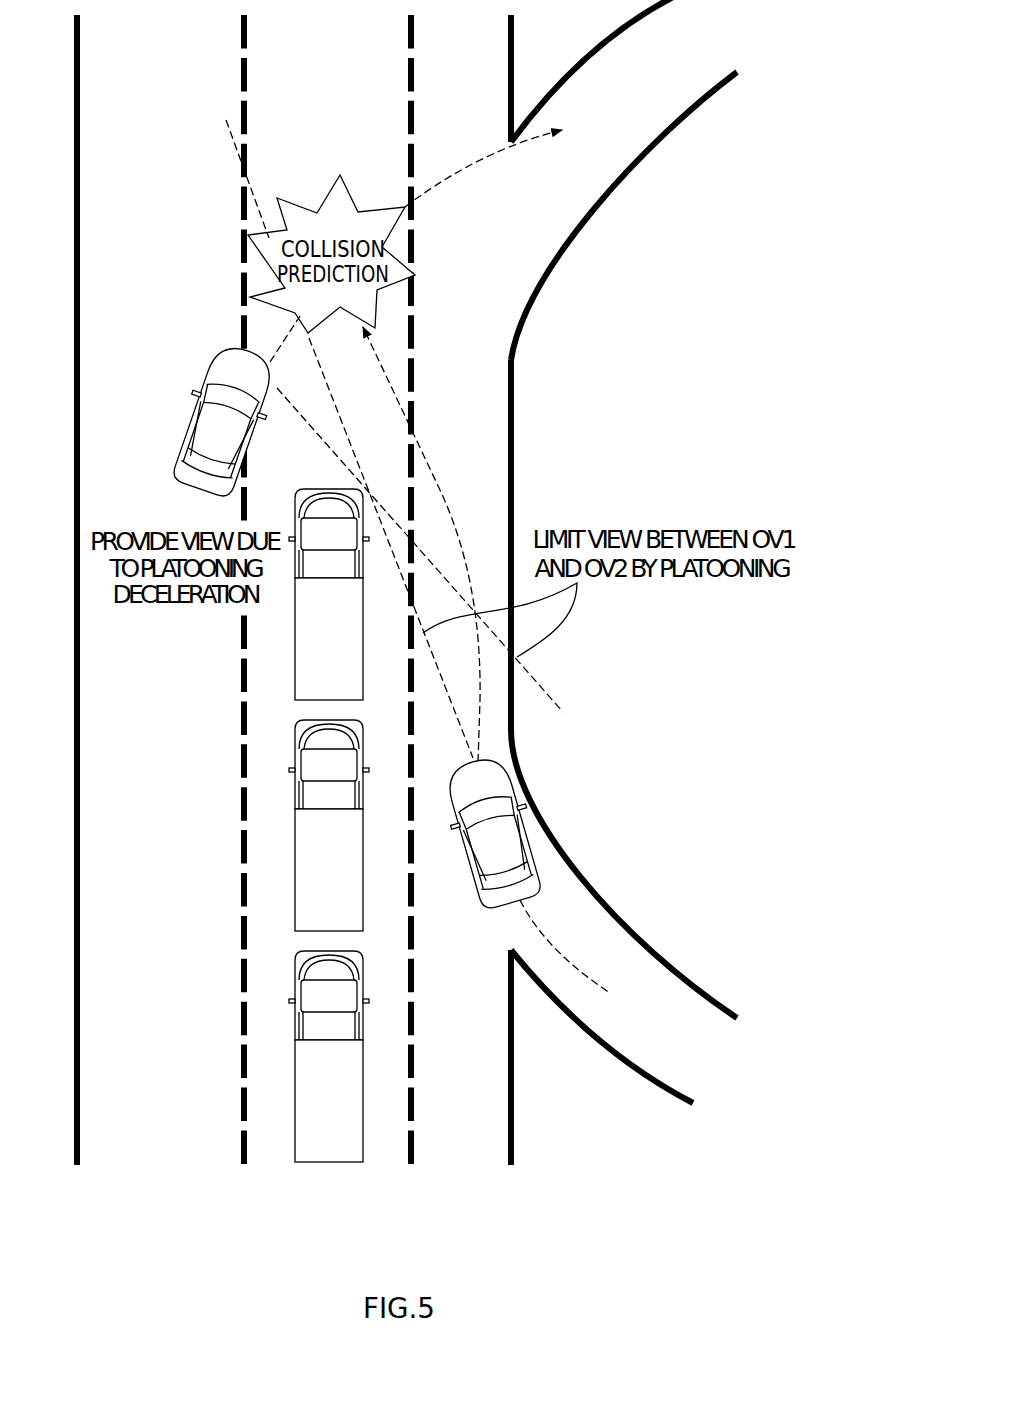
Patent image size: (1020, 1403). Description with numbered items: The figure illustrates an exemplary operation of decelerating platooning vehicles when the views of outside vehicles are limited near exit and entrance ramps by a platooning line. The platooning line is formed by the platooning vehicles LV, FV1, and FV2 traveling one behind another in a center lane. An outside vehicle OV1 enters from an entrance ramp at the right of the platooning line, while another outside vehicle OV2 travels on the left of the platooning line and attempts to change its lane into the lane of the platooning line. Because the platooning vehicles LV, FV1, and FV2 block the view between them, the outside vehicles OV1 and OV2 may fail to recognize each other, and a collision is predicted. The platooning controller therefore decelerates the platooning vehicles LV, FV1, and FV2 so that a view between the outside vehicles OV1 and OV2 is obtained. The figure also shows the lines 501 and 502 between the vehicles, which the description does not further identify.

The line of sight between OV1 and OV2 limited by platooning 501 is at (390, 547).
The predicted travel path of OV1 502 is at (430, 467).
The outside vehicle OV1 is at (492, 832).
The outside vehicle OV2 is at (223, 419).
The platooning vehicle LV is at (329, 594).
The platooning vehicle FV1 is at (329, 825).
The platooning vehicle FV2 is at (329, 1056).